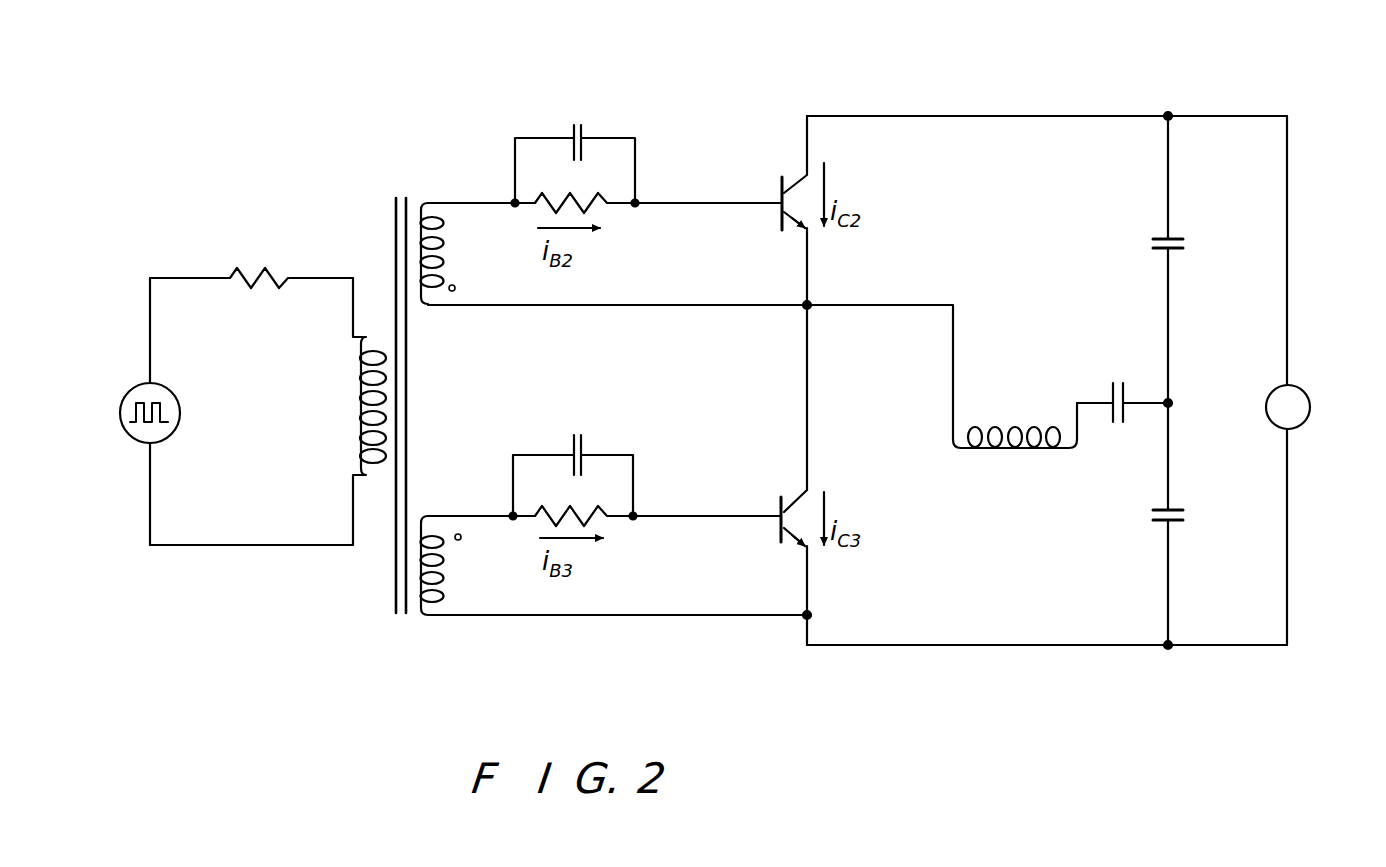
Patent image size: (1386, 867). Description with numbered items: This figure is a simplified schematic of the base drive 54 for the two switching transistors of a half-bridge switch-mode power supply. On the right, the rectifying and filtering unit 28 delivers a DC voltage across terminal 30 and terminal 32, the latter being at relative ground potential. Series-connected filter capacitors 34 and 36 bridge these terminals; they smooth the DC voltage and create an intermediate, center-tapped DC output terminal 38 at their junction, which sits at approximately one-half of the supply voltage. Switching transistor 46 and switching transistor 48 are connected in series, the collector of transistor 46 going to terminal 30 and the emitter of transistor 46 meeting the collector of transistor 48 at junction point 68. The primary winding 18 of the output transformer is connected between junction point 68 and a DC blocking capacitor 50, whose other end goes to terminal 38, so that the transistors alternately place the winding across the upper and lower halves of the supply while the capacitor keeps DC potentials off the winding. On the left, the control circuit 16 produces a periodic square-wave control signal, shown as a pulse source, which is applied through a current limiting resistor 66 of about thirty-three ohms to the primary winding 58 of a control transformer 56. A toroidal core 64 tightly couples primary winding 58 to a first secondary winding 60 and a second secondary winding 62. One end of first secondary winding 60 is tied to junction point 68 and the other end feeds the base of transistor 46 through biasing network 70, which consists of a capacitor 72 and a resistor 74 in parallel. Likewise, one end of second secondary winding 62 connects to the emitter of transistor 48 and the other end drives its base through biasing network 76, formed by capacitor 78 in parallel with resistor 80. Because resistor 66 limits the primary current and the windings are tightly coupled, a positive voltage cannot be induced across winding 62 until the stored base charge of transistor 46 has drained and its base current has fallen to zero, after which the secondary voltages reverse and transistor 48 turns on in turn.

The control circuit 16 is at (178, 436).
The current limiting resistor 66 is at (272, 276).
The primary winding 58 is at (361, 398).
The control transformer 56 is at (370, 361).
The toroidal core 64 is at (400, 562).
The first secondary winding 60 is at (427, 203).
The second secondary winding 62 is at (430, 617).
The biasing network 70 is at (605, 135).
The capacitor 72 is at (577, 122).
The resistor 74 is at (568, 202).
The biasing network 76 is at (604, 454).
The capacitor 78 is at (577, 434).
The resistor 80 is at (578, 514).
The switching transistor 46 is at (797, 184).
The switching transistor 48 is at (795, 504).
The base drive 54 is at (815, 88).
The junction point 68 is at (814, 310).
The terminal 30 is at (1168, 112).
The terminal 32 is at (1168, 648).
The filter capacitor 34 is at (1152, 240).
The filter capacitor 36 is at (1160, 520).
The intermediate DC output terminal 38 is at (1173, 402).
The DC blocking capacitor 50 is at (1120, 383).
The primary winding 18 is at (1043, 450).
The rectifying and filtering unit 28 is at (1278, 424).